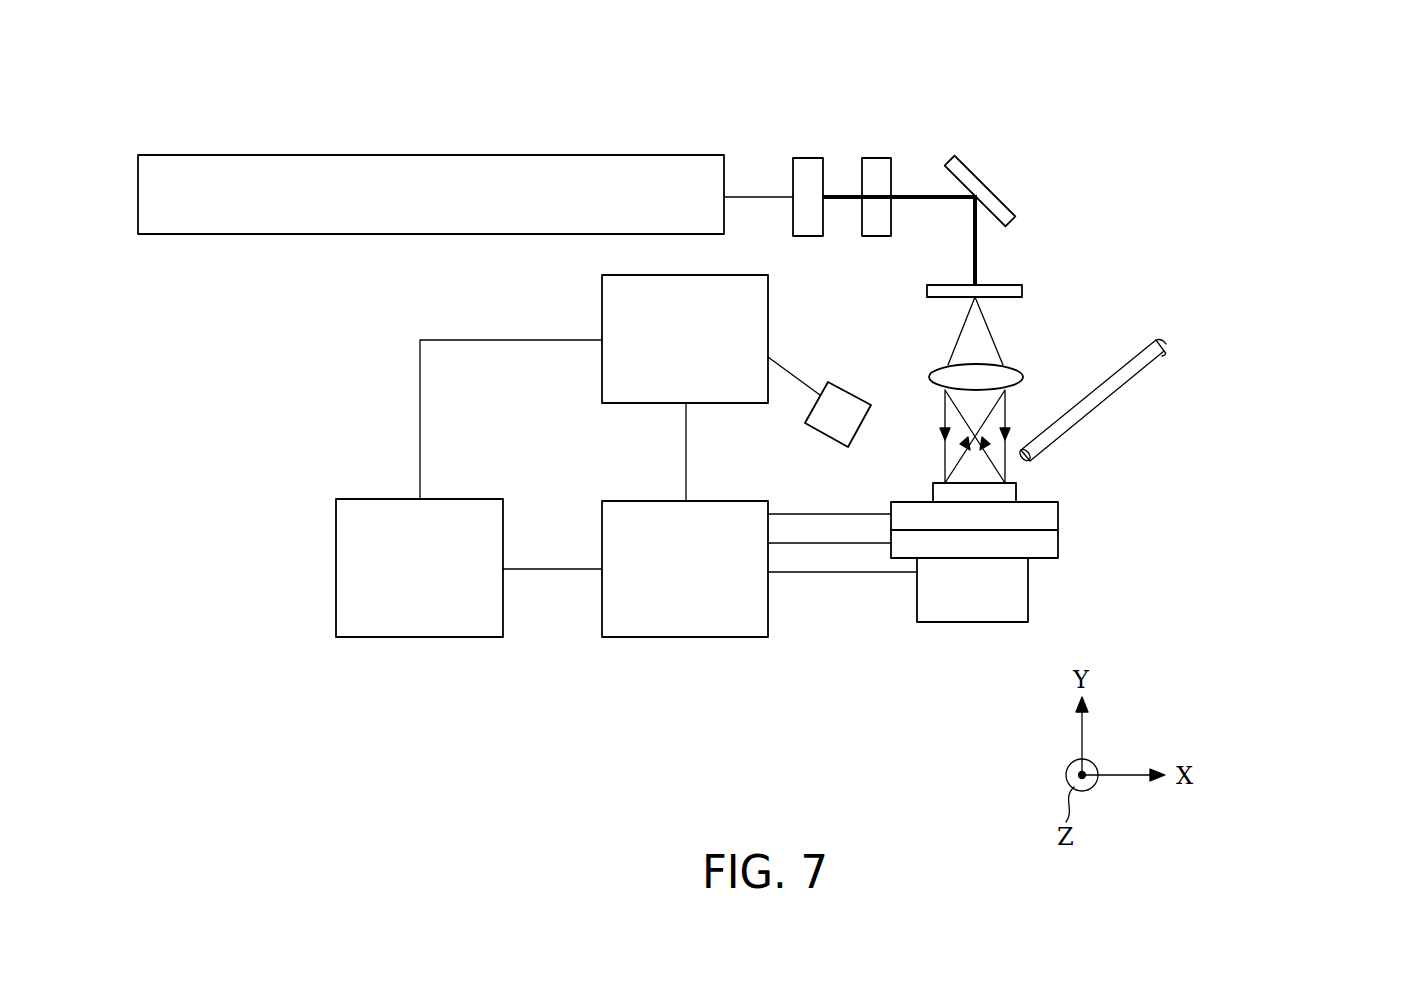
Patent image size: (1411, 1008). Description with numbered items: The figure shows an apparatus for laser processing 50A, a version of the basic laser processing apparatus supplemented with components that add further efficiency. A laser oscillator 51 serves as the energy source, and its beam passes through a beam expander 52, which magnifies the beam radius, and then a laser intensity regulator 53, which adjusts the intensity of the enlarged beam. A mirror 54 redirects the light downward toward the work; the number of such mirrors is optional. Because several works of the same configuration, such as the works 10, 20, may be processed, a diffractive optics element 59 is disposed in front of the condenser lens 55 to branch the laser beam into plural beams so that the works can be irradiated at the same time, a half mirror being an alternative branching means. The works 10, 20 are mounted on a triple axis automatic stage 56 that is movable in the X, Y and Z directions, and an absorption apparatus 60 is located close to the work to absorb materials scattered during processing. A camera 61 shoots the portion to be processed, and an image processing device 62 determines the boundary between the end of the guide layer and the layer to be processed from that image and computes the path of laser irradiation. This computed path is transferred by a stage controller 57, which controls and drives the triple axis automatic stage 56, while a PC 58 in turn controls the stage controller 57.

The apparatus for laser processing 50A is at (976, 98).
The laser oscillator 51 is at (423, 157).
The beam expander 52 is at (800, 157).
The laser intensity regulator 53 is at (880, 157).
The mirror 54 is at (995, 192).
The condenser lens 55 is at (997, 365).
The triple axis automatic stage 56 is at (1088, 502).
The stage controller 57 is at (703, 637).
The PC 58 is at (445, 637).
The diffractive optics element 59 is at (1010, 278).
The absorption apparatus 60 is at (1125, 383).
The camera 61 is at (857, 392).
The image processing device 62 is at (602, 295).
The work 10 is at (1049, 478).
The work 20 is at (1020, 493).